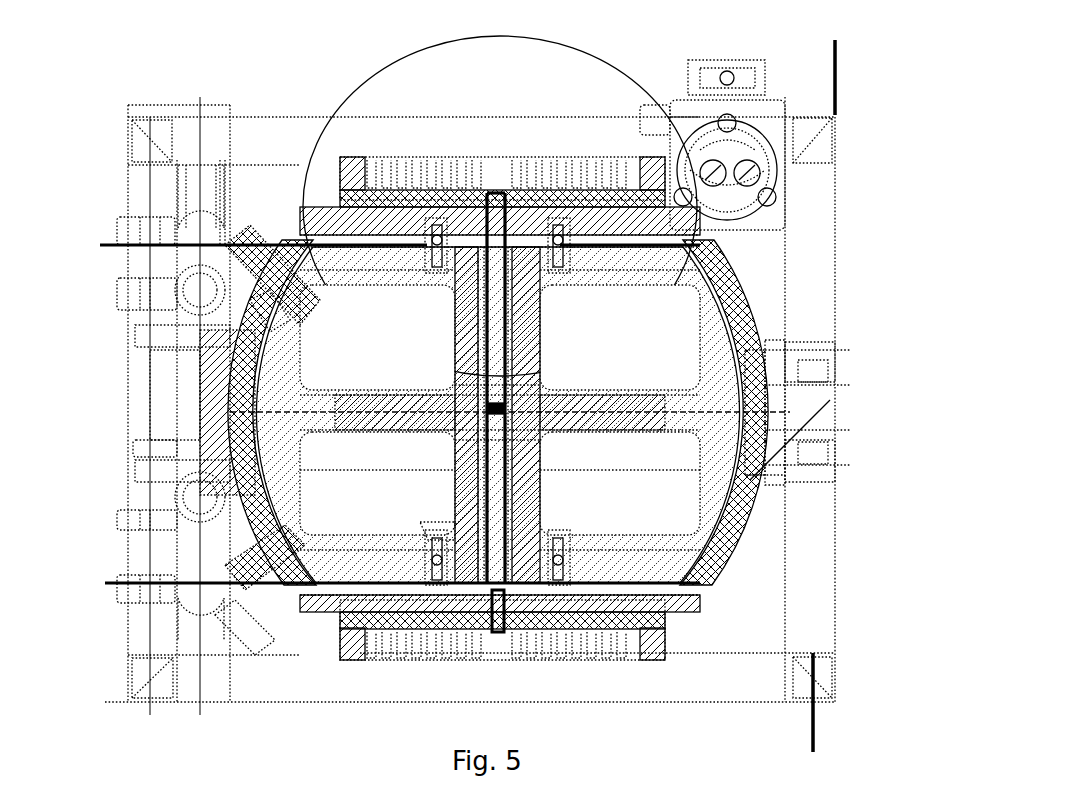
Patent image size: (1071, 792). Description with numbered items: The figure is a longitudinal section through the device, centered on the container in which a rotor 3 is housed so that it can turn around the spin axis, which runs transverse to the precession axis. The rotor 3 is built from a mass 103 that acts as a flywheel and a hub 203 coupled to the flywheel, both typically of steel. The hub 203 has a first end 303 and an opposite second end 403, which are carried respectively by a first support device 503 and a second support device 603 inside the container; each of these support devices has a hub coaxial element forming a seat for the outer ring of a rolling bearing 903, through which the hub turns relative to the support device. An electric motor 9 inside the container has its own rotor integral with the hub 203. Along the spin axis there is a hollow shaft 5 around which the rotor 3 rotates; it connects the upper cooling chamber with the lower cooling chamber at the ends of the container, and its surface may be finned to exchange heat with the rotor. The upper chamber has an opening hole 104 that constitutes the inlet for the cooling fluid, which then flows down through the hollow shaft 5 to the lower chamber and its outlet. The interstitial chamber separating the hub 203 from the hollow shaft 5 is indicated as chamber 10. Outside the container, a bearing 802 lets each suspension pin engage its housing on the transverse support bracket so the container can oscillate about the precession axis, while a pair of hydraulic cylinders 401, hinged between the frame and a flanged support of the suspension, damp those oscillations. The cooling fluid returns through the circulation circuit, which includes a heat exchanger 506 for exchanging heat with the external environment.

The rotor 3 is at (620, 459).
The hollow shaft 5 is at (451, 395).
The electric motor 9 is at (410, 522).
The interstitial chamber 10 is at (518, 415).
The mass 103 is at (509, 412).
The opening hole 104 is at (466, 354).
The hub 203 is at (380, 482).
The first end 303 is at (597, 247).
The hydraulic cylinder 401 is at (188, 410).
The second end 403 is at (594, 557).
The first support device 503 is at (398, 248).
The heat exchanger 506 is at (532, 134).
The second support device 603 is at (393, 557).
The bearing 802 is at (819, 440).
The rolling bearing 903 is at (601, 398).